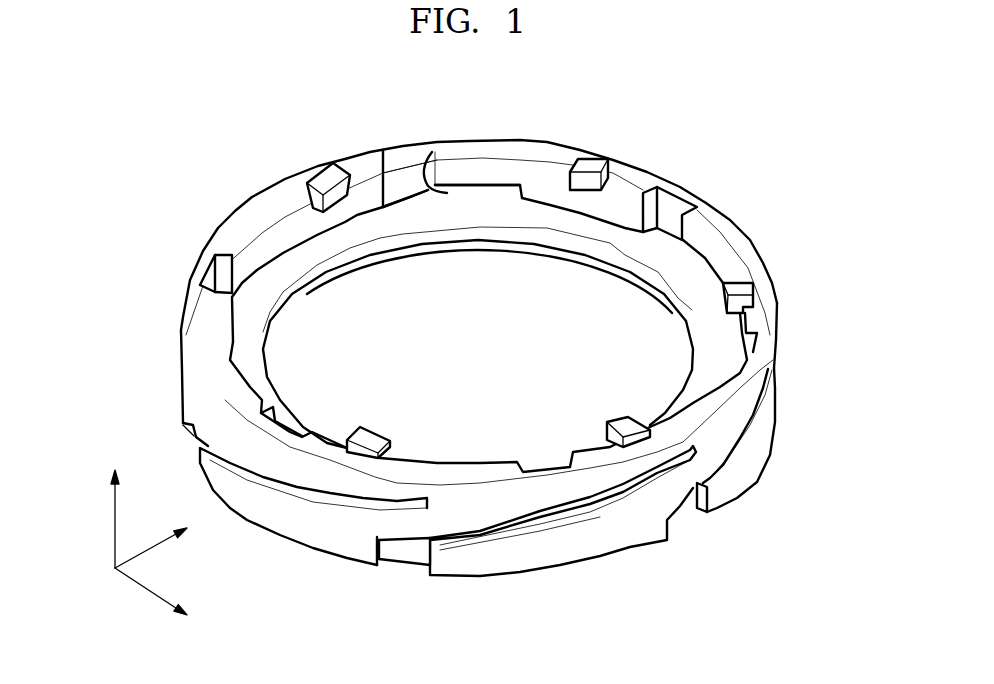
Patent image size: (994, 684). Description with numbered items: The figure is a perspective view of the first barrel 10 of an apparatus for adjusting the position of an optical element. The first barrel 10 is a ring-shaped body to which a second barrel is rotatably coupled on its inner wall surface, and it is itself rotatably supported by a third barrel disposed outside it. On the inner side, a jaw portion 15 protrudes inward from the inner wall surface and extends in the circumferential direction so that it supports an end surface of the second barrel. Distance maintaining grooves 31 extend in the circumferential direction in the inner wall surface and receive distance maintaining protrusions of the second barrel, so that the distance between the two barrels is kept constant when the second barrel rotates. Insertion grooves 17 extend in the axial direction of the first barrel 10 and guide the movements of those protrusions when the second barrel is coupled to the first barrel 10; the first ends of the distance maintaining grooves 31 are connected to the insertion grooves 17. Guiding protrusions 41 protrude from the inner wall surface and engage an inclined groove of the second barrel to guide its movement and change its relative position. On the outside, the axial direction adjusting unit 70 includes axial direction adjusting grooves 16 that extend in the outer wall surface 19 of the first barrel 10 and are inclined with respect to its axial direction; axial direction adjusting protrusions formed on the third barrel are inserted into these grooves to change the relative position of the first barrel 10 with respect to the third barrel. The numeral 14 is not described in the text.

The first barrel 10 is at (197, 121).
The end face of band segment 14 is at (379, 565).
The jaw portion 15 is at (372, 210).
The axial direction adjusting grooves 16 is at (483, 533).
The insertion grooves 17 is at (405, 170).
The outer wall surface 19 is at (628, 536).
The distance maintaining grooves 31 is at (435, 160).
The guiding protrusions 41 is at (740, 292).
The axial direction adjusting unit 70 is at (421, 580).